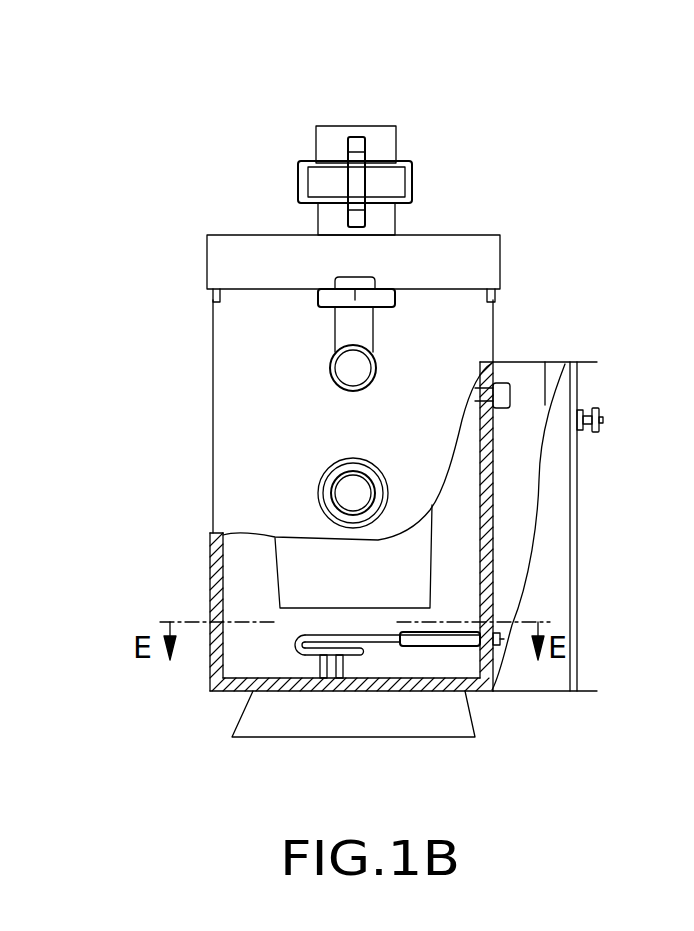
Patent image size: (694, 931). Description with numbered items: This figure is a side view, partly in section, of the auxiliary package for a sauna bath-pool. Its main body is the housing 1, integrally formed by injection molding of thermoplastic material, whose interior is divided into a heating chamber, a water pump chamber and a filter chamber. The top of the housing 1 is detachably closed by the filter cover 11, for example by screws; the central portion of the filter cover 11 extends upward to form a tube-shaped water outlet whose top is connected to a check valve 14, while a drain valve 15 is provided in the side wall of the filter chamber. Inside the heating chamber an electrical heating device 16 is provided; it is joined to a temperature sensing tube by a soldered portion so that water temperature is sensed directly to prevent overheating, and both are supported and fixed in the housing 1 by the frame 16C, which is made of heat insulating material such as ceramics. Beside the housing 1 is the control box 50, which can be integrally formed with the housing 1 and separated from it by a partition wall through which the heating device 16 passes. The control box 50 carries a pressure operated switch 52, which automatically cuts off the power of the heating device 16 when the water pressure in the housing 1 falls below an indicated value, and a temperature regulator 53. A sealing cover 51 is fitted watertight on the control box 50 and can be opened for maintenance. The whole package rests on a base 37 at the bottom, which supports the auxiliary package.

The housing 1 is at (237, 463).
The filter cover 11 is at (452, 245).
The check valve 14 is at (335, 137).
The drain valve 15 is at (352, 322).
The electrical heating device 16 is at (305, 657).
The frame 16C is at (322, 657).
The base 37 is at (255, 722).
The control box 50 is at (517, 677).
The sealing cover 51 is at (573, 575).
The pressure operated switch 52 is at (500, 383).
The temperature regulator 53 is at (585, 432).